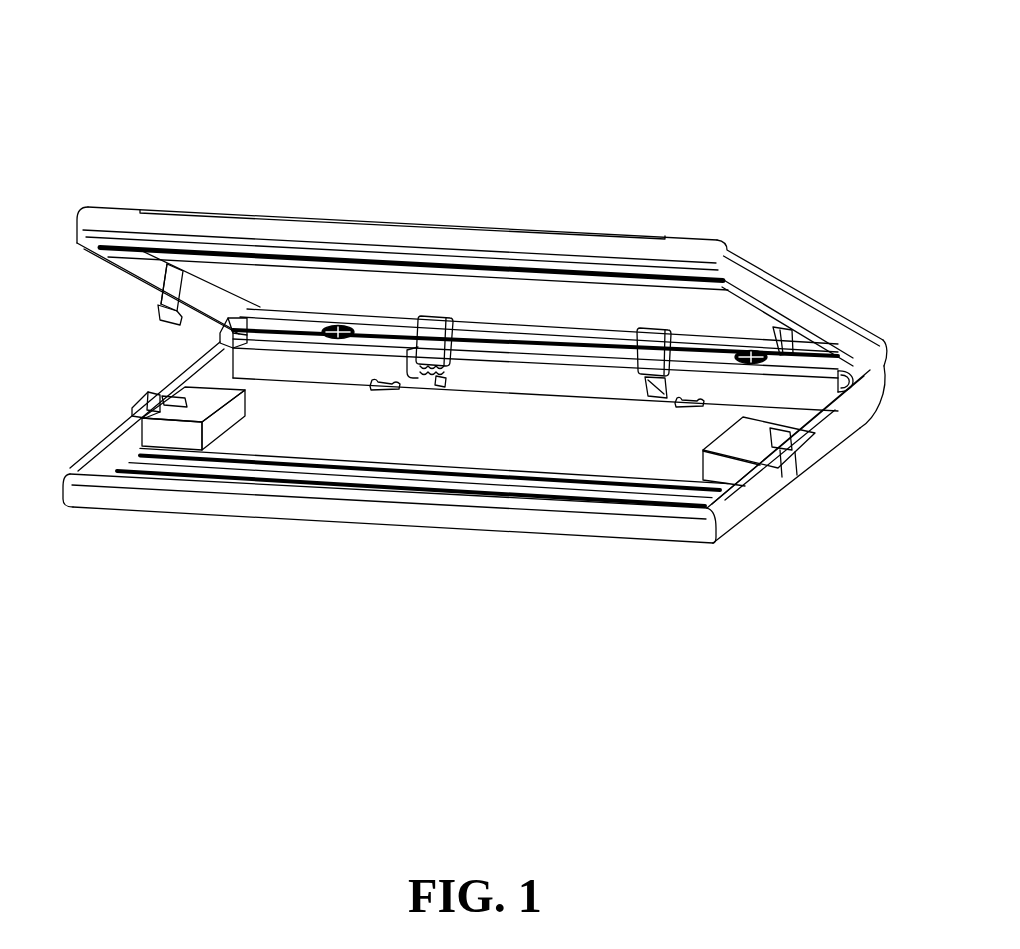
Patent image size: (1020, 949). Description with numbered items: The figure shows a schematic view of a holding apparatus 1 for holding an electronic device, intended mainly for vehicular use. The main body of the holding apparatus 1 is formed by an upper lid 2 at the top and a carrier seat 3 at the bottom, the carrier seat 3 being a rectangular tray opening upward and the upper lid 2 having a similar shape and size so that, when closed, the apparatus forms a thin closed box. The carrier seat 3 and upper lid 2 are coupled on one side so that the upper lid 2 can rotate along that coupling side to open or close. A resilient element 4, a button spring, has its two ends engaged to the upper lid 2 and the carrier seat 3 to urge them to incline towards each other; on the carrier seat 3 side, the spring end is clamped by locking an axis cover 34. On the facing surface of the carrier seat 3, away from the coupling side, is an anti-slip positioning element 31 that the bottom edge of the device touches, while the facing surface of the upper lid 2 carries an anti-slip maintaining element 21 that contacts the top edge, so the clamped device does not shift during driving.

The holding apparatus 1 is at (478, 140).
The upper lid 2 is at (763, 290).
The maintaining element 21 is at (578, 275).
The carrier seat 3 is at (342, 440).
The positioning element 31 is at (447, 477).
The axis cover 34 is at (282, 363).
The resilient element 4 is at (405, 372).